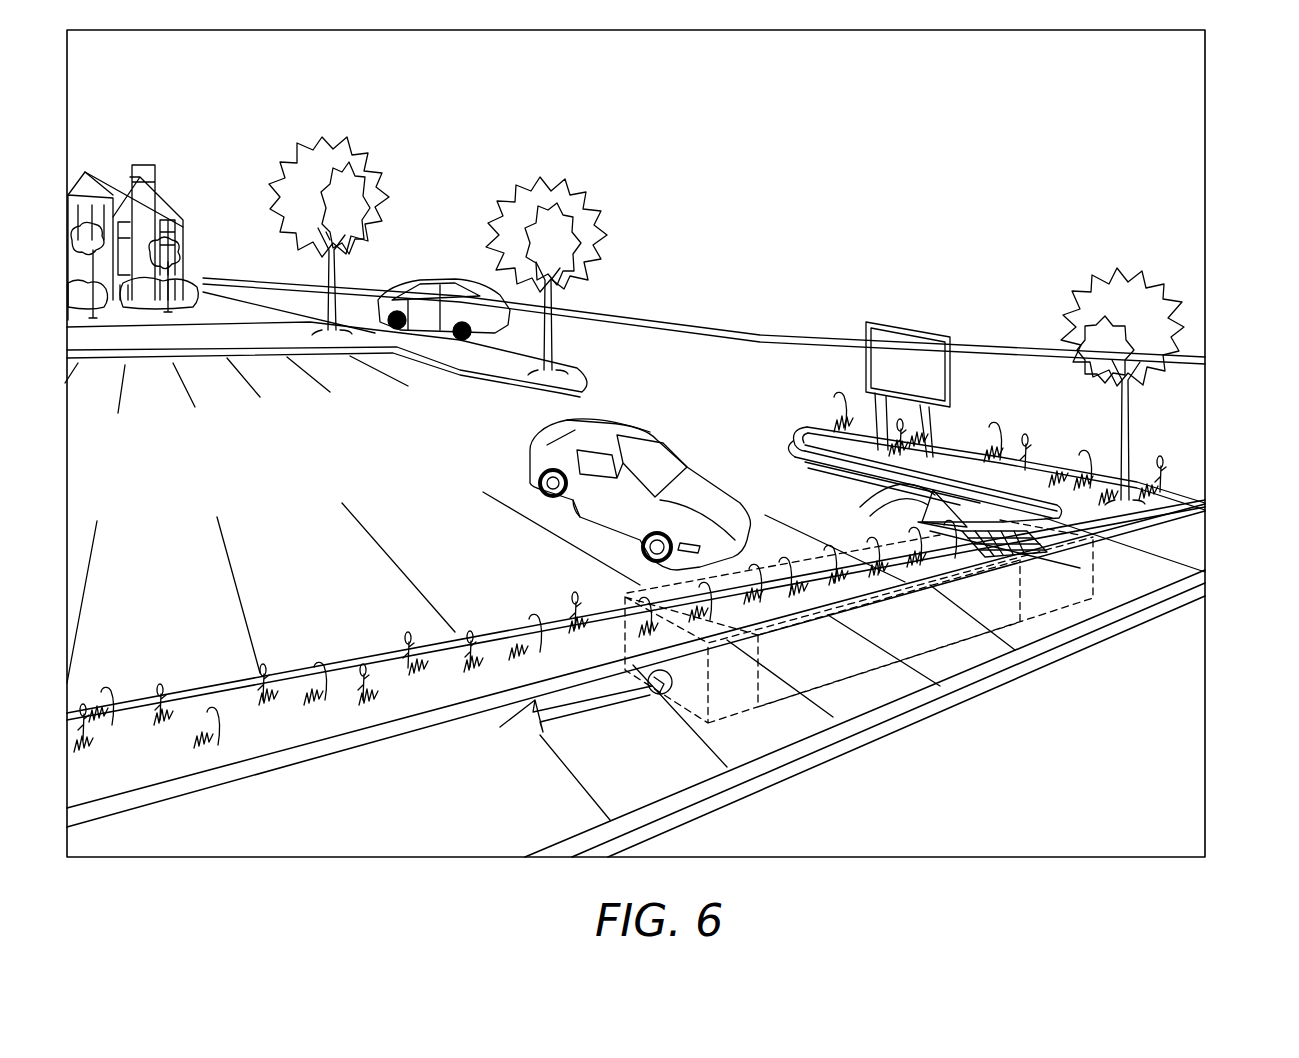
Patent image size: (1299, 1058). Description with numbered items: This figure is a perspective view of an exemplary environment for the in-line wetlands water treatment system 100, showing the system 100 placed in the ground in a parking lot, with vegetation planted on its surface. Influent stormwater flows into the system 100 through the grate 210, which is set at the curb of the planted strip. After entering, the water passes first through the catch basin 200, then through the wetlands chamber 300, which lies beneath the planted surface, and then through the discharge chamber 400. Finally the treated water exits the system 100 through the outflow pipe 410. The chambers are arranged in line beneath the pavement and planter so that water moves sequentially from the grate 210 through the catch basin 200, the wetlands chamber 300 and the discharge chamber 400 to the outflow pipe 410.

The in-line wetlands water treatment system 100 is at (1118, 566).
The catch basin 200 is at (1045, 587).
The grate 210 is at (903, 508).
The wetlands chamber 300 is at (903, 617).
The discharge chamber 400 is at (722, 695).
The outflow pipe 410 is at (667, 700).